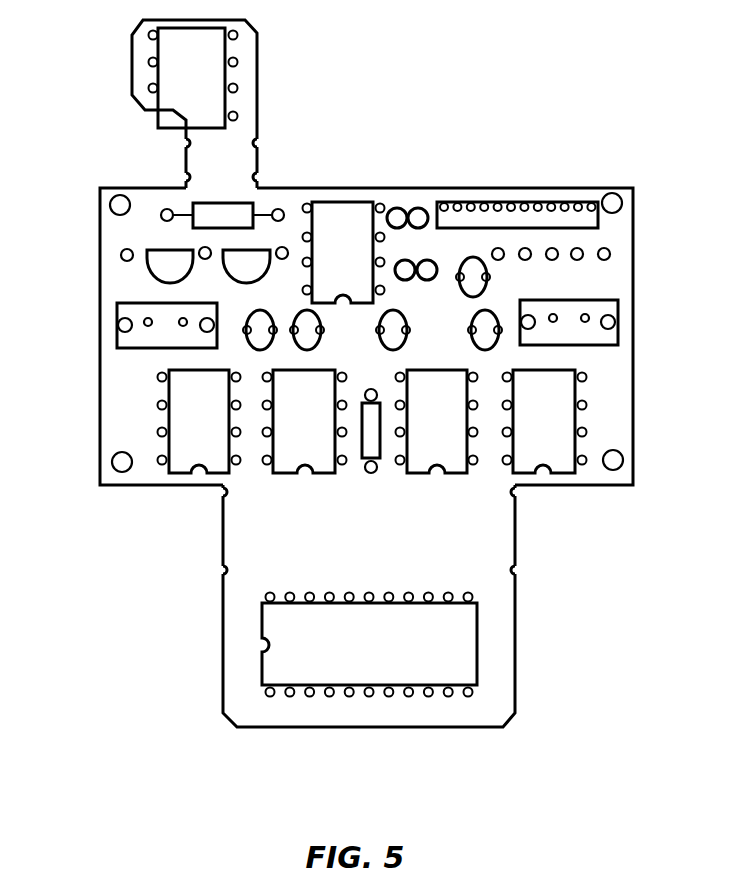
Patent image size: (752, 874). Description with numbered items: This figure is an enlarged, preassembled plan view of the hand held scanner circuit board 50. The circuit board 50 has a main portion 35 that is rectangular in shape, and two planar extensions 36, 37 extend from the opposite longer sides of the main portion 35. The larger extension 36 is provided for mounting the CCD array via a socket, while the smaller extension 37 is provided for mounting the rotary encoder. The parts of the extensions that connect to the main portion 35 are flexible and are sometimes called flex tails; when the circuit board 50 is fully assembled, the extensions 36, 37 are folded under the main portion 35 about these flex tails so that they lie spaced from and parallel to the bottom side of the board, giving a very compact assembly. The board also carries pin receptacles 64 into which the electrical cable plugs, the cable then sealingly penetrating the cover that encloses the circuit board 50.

The circuit board 50 is at (401, 142).
The main portion 35 is at (102, 352).
The larger extension 36 is at (385, 728).
The smaller extension 37 is at (130, 60).
The pin receptacles 64 is at (525, 202).